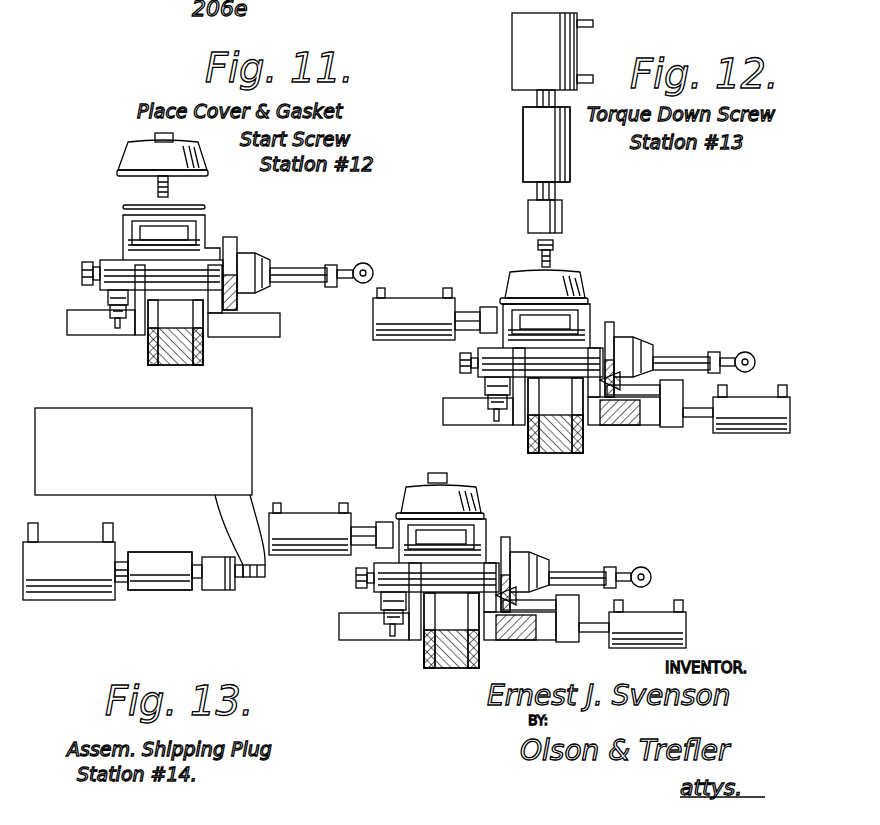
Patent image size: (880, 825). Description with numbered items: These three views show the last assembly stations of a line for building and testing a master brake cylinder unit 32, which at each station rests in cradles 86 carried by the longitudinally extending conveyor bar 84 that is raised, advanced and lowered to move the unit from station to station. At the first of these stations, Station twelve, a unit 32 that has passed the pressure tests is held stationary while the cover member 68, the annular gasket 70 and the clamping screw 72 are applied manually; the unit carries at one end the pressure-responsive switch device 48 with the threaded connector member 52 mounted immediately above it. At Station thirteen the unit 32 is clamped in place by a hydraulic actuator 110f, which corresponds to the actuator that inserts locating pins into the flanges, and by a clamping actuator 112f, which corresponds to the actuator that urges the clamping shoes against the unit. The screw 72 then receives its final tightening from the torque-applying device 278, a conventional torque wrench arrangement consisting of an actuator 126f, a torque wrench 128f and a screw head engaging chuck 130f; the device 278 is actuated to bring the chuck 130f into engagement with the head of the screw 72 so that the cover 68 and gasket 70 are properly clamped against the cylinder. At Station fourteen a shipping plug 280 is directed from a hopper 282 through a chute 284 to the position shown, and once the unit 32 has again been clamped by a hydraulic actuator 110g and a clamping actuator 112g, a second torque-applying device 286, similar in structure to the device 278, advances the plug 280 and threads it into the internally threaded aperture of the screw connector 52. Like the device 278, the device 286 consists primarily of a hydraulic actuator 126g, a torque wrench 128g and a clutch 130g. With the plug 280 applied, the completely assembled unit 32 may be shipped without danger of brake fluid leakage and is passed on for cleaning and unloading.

In FIG. 11, the master brake cylinder unit 32 is at (240, 240).
In FIG. 12, the master brake cylinder unit 32 is at (594, 318).
In FIG. 13, the master brake cylinder unit 32 is at (495, 567).
In FIG. 11, the pressure-responsive switch device 48 is at (110, 318).
In FIG. 12, the pressure-responsive switch device 48 is at (478, 405).
In FIG. 13, the pressure-responsive switch device 48 is at (348, 633).
In FIG. 11, the threaded connector member 52 is at (85, 260).
In FIG. 12, the threaded connector member 52 is at (460, 372).
In FIG. 13, the threaded connector member 52 is at (337, 580).
In FIG. 11, the cover member 68 is at (138, 155).
In FIG. 12, the cover member 68 is at (580, 285).
In FIG. 13, the cover member 68 is at (440, 496).
In FIG. 11, the annular gasket 70 is at (207, 207).
In FIG. 11, the clamping screw 72 is at (172, 190).
In FIG. 12, the clamping screw 72 is at (555, 258).
In FIG. 11, the longitudinally extending bar 84 is at (185, 355).
In FIG. 12, the longitudinally extending bar 84 is at (555, 415).
In FIG. 13, the longitudinally extending bar 84 is at (451, 654).
In FIG. 11, the cradles 86 is at (150, 362).
In FIG. 13, the cradles 86 is at (449, 640).
In FIG. 12, the hydraulic actuator 110f is at (755, 432).
In FIG. 13, the hydraulic actuator 110g is at (687, 624).
In FIG. 12, the clamping actuator 112f is at (413, 310).
In FIG. 13, the clamping actuator 112g is at (331, 511).
In FIG. 12, the actuator 126f is at (565, 48).
In FIG. 13, the hydraulic actuator 126g is at (65, 550).
In FIG. 12, the torque wrench 128f is at (533, 125).
In FIG. 13, the torque wrench 128g is at (172, 594).
In FIG. 12, the screw head engaging chuck 130f is at (558, 212).
In FIG. 13, the clutch 130g is at (215, 592).
In FIG. 12, the torque-applying device 278 is at (521, 160).
In FIG. 13, the plug 280 is at (258, 578).
In FIG. 13, the hopper 282 is at (253, 448).
In FIG. 13, the chute 284 is at (230, 508).
In FIG. 13, the torque-applying device 286 is at (143, 605).